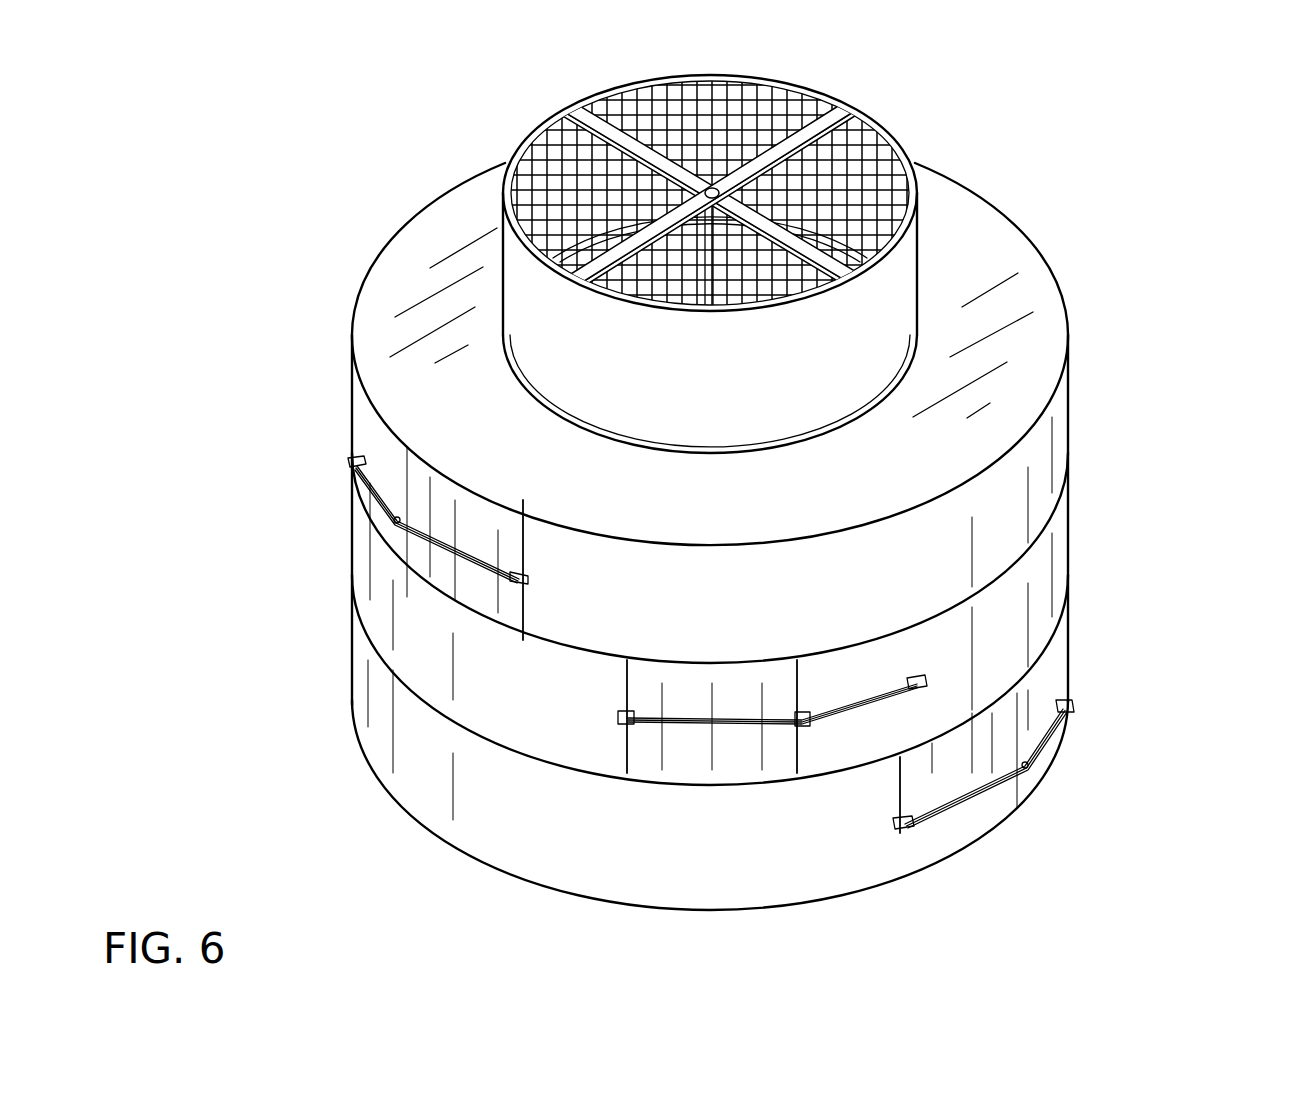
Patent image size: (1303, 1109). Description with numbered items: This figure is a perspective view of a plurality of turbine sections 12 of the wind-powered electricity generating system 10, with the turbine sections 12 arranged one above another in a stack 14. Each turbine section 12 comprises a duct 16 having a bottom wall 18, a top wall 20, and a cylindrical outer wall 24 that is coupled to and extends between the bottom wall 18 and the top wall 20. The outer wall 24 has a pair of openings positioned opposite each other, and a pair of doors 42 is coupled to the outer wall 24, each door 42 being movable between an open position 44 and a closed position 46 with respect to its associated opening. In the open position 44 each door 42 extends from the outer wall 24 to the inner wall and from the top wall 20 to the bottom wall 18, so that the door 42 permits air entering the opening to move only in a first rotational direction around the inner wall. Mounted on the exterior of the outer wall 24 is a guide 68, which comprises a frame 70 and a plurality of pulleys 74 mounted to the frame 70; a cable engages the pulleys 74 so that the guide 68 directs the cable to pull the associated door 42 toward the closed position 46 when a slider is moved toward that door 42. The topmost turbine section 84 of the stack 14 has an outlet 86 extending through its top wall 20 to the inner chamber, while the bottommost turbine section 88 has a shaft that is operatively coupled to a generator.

The wind-powered electricity generating system 10 is at (1060, 170).
The turbine section 12 is at (322, 391).
The stack 14 is at (1097, 341).
The duct 16 is at (1050, 457).
The bottom wall 18 is at (460, 727).
The top wall 20 is at (390, 292).
The outer wall 24 is at (1057, 420).
The door 42 is at (368, 705).
The open position 44 is at (967, 845).
The closed position 46 is at (398, 607).
The guide 68 is at (320, 471).
The frame 70 is at (383, 503).
The pulley 74 is at (517, 577).
The topmost turbine section 84 is at (1033, 495).
The outlet 86 is at (868, 160).
The bottommost turbine section 88 is at (1066, 715).